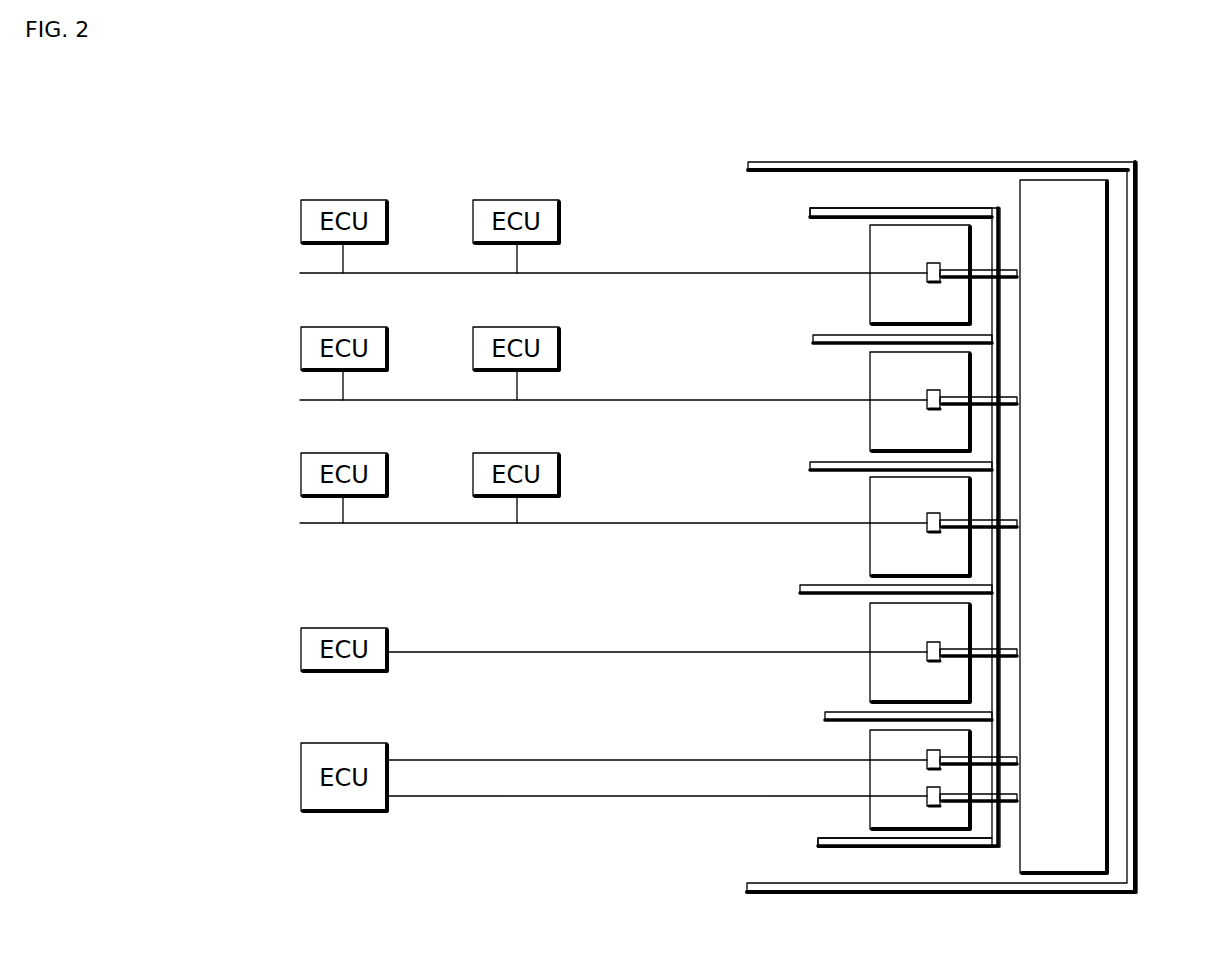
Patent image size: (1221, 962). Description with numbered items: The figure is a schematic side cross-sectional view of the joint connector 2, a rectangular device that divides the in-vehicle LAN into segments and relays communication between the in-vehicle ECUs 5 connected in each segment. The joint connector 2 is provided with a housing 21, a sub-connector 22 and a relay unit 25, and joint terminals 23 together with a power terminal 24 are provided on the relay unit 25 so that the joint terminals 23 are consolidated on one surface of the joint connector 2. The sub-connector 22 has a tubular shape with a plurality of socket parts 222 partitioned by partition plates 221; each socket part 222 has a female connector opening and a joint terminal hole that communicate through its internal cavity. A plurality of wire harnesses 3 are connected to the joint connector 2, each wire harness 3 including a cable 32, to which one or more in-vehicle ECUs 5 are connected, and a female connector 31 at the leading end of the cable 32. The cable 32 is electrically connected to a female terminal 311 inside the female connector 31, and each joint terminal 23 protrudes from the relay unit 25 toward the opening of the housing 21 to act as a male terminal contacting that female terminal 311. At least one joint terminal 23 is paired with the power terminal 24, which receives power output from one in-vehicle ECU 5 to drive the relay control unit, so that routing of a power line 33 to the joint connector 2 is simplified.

The joint connector 2 is at (1137, 97).
The housing 21 is at (943, 162).
The sub-connector 22 is at (876, 208).
The partition plate 221 is at (830, 335).
The socket part 222 is at (840, 218).
The joint terminal 23 is at (1017, 274).
The power terminal 24 is at (1017, 797).
The relay unit 25 is at (1110, 195).
The wire harness 3 is at (748, 197).
The female connector 31 is at (870, 268).
The female terminal 311 is at (967, 263).
The cable 32 is at (663, 273).
The power line 33 is at (582, 797).
The in-vehicle ECU 5 is at (335, 200).